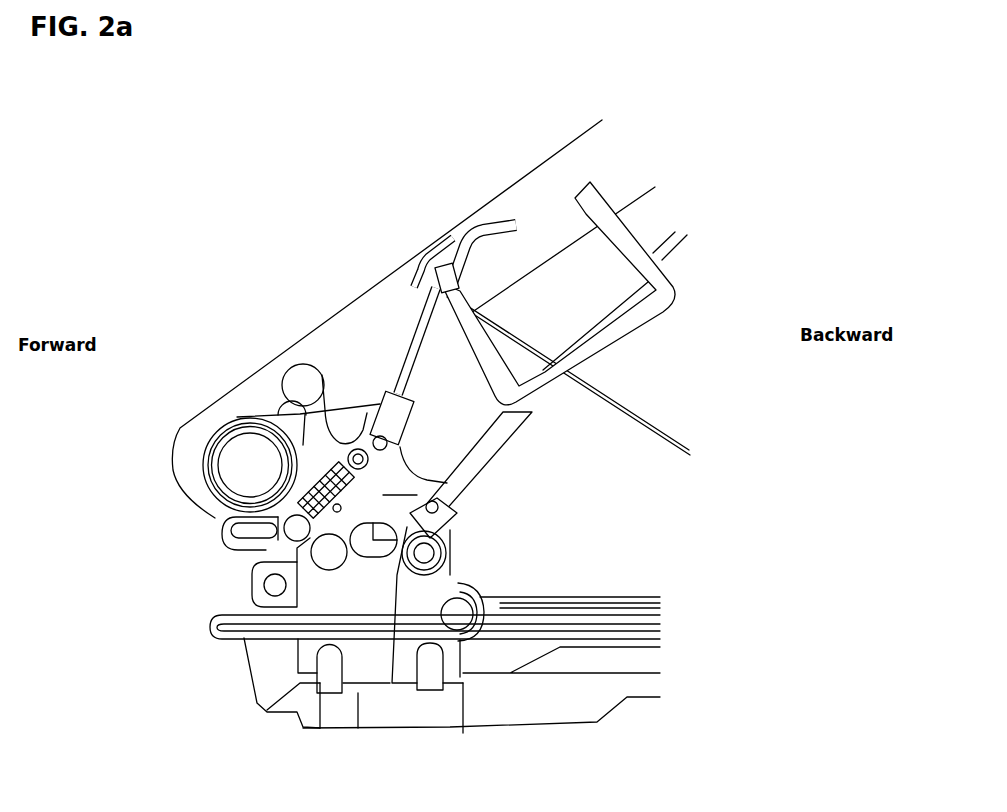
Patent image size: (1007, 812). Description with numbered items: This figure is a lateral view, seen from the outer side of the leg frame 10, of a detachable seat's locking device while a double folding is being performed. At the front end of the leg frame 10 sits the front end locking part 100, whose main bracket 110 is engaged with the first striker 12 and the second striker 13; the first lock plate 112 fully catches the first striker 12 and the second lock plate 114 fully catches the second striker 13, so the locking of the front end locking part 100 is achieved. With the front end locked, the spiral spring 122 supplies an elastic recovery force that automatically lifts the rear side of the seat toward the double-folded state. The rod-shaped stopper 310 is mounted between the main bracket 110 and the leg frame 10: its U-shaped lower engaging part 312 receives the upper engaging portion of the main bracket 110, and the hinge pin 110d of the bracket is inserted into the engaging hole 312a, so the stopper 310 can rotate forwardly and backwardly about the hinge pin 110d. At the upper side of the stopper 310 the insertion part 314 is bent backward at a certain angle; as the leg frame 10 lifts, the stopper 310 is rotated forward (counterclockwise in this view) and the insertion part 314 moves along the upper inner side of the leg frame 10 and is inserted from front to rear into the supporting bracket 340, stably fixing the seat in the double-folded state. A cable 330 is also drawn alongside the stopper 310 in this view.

The leg frame 10 is at (477, 217).
The first striker 12 is at (463, 730).
The second striker 13 is at (260, 713).
The front end locking part 100 is at (252, 592).
The main bracket 110 is at (441, 507).
The hinge pin 110d is at (296, 351).
The first lock plate 112 is at (480, 584).
The second lock plate 114 is at (358, 728).
The spiral spring 122 is at (208, 466).
The stopper 310 is at (413, 337).
The engaging part 312 is at (383, 393).
The engaging hole 312a is at (400, 447).
The insertion part 314 is at (483, 221).
The release cable 330 is at (616, 397).
The supporting bracket 340 is at (437, 247).